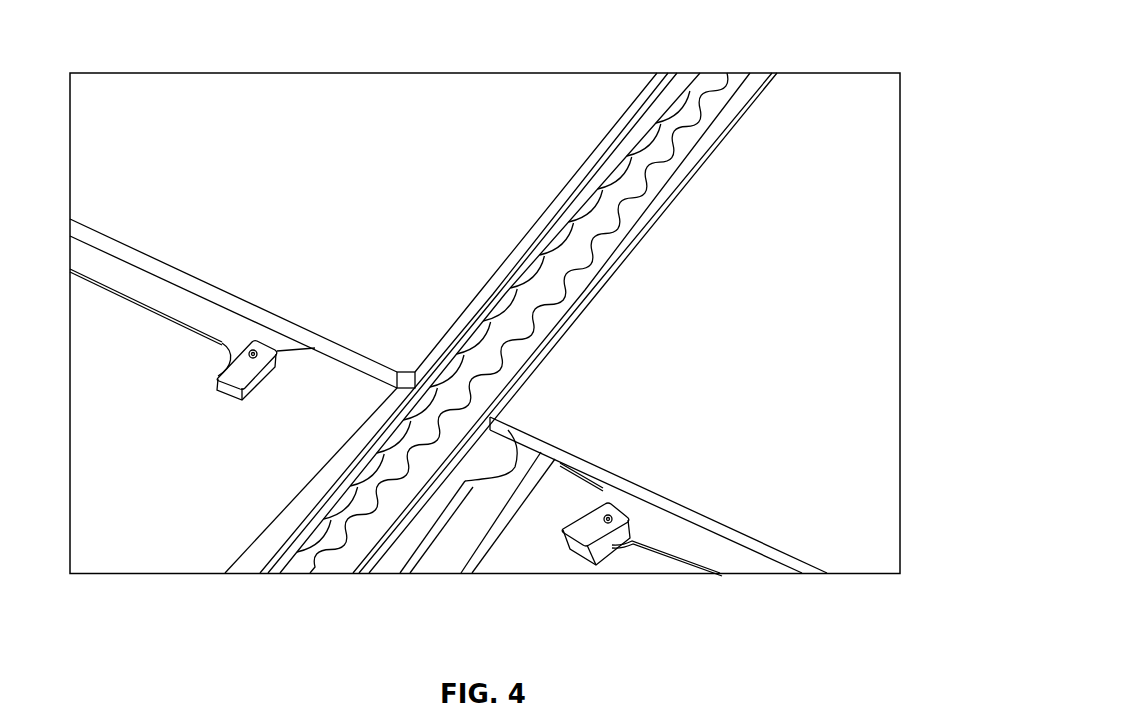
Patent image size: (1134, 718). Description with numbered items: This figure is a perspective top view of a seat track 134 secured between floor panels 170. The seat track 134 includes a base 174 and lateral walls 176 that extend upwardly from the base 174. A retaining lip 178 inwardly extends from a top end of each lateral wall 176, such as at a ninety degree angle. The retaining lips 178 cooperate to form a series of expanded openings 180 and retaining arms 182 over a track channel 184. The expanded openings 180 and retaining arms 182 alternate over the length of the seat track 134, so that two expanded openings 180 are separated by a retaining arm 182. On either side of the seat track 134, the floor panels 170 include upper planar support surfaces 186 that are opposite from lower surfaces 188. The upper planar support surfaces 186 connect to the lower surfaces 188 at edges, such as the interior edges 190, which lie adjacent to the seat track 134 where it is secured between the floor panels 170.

The floor panel 170 is at (495, 88).
The upper planar support surface 186 is at (567, 100).
The interior edge 190 is at (661, 96).
The track channel 184 is at (716, 82).
The seat track 134 is at (545, 258).
The lower surface 188 is at (313, 352).
The lateral wall 176 is at (378, 442).
The retaining arm 182 is at (352, 480).
The retaining lip 178 is at (287, 555).
The expanded opening 180 is at (316, 545).
The base 174 is at (479, 527).